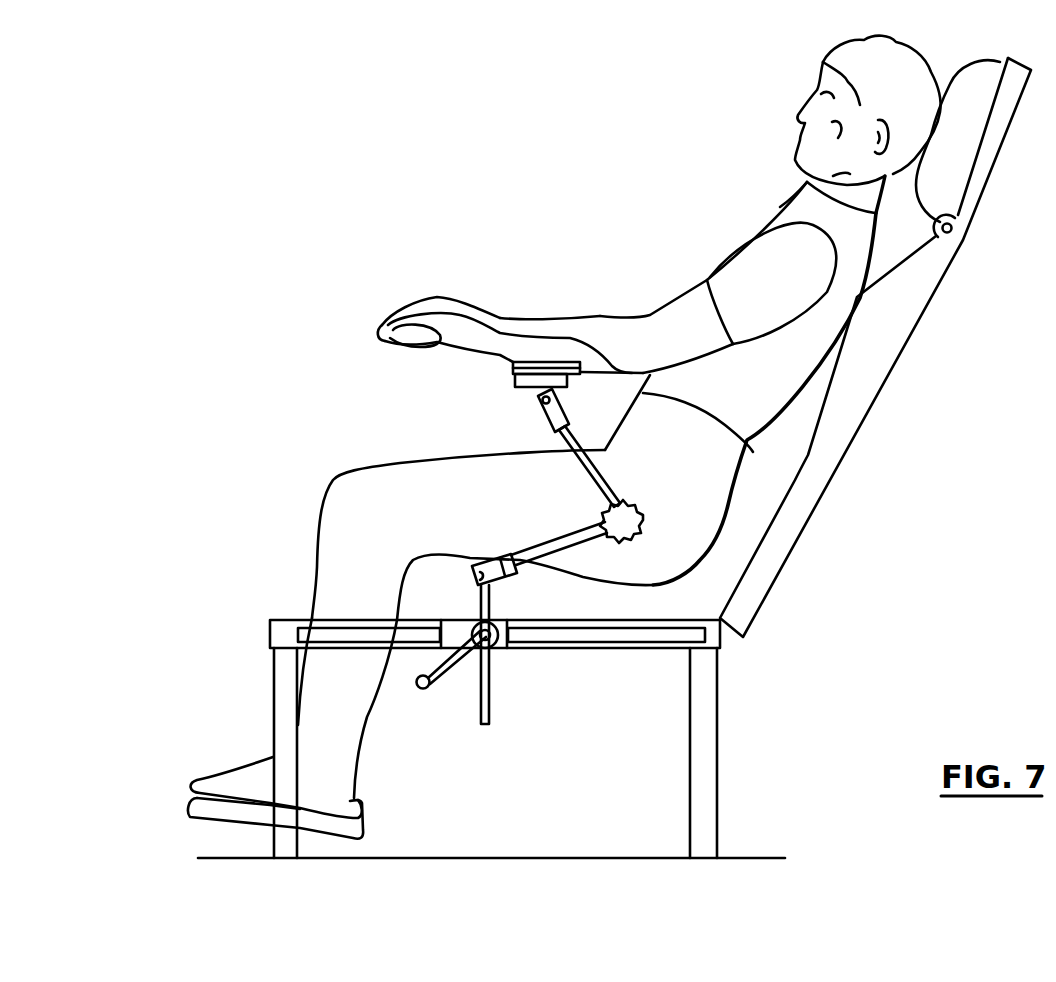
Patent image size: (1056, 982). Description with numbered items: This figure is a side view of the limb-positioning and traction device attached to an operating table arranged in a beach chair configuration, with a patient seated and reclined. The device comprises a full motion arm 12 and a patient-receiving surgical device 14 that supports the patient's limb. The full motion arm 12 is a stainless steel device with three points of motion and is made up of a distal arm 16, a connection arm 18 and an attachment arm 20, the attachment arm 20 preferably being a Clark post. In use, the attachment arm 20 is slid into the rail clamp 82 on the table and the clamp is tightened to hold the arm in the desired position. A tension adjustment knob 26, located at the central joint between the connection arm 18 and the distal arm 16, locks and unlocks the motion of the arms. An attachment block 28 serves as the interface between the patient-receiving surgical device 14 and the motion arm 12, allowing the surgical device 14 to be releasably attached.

The full motion arm 12 is at (592, 452).
The patient-receiving surgical device 14 is at (543, 343).
The distal arm 16 is at (558, 431).
The connection arm 18 is at (533, 558).
The attachment arm 20 is at (489, 697).
The tension adjustment knob 26 is at (640, 523).
The attachment block 28 is at (513, 370).
The rail clamp 82 is at (452, 628).